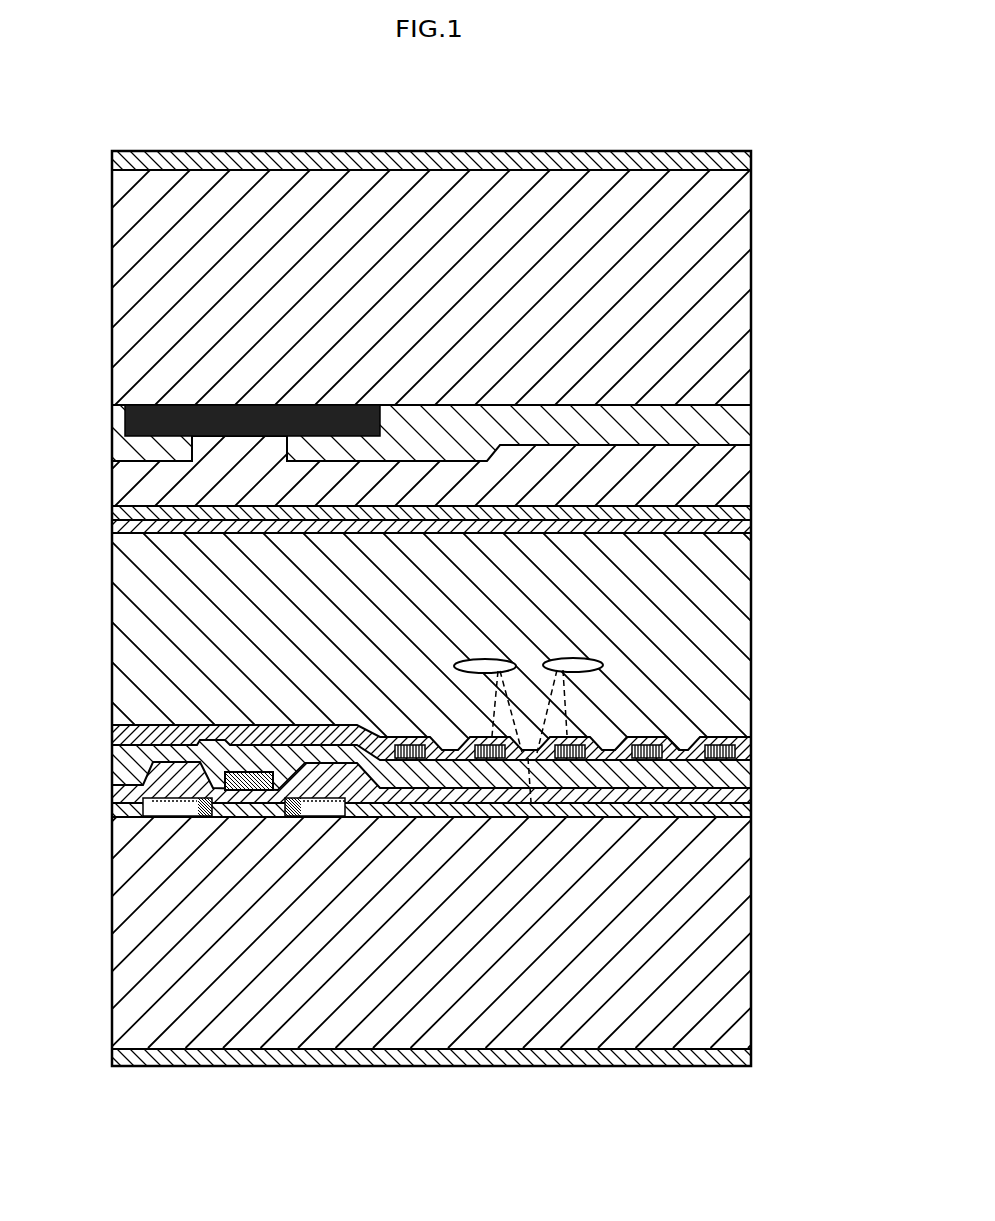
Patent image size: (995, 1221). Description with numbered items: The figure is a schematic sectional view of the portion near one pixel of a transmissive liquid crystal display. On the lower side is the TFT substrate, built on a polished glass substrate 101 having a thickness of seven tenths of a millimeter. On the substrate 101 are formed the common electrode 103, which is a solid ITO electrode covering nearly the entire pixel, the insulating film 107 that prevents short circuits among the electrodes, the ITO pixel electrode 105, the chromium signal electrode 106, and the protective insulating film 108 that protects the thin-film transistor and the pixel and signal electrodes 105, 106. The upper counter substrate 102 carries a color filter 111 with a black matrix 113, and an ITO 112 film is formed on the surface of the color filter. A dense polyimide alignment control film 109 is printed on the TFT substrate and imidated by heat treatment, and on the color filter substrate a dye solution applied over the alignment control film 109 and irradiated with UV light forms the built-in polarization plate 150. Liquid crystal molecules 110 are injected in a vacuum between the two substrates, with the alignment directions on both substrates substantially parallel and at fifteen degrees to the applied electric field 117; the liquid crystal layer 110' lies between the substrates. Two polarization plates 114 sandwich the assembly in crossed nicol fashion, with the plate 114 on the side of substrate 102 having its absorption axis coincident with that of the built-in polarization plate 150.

The substrate 101 is at (748, 946).
The substrate 102 is at (748, 285).
The common electrode 103 is at (751, 818).
The pixel electrode 105 is at (392, 728).
The signal electrode 106 is at (225, 780).
The insulating film 107 is at (751, 797).
The protective insulating film 108 is at (751, 770).
The alignment control film 109 is at (748, 508).
The liquid crystal molecules 110 is at (528, 684).
The filler layer 110' is at (480, 641).
The color filter 111 is at (748, 425).
The ITO 112 is at (748, 467).
The black matrix 113 is at (138, 404).
The polarization plate 114 is at (748, 158).
The applied electric field 117 is at (495, 700).
The built-in polarization plate 150 is at (112, 523).